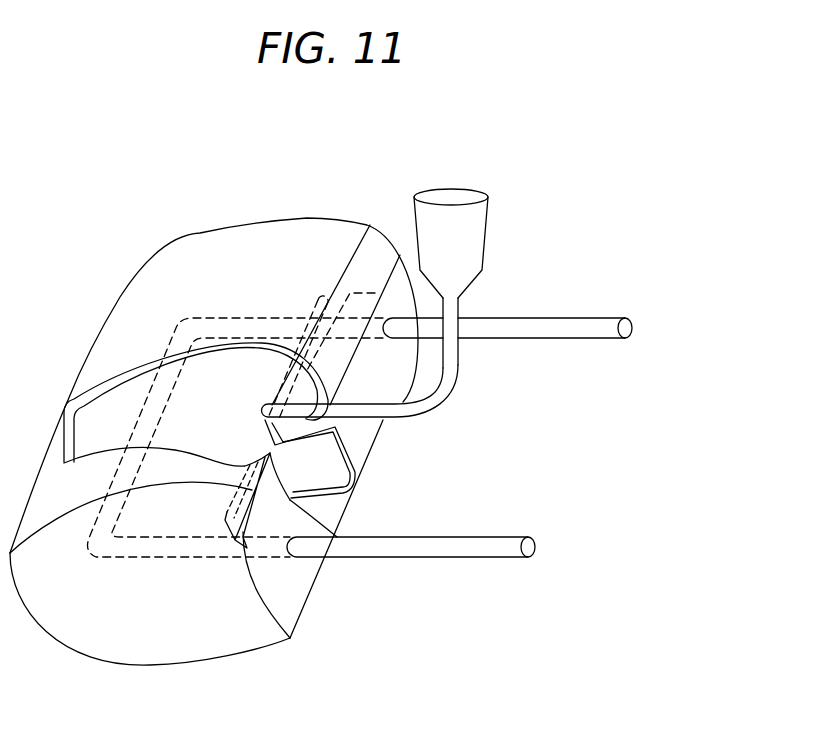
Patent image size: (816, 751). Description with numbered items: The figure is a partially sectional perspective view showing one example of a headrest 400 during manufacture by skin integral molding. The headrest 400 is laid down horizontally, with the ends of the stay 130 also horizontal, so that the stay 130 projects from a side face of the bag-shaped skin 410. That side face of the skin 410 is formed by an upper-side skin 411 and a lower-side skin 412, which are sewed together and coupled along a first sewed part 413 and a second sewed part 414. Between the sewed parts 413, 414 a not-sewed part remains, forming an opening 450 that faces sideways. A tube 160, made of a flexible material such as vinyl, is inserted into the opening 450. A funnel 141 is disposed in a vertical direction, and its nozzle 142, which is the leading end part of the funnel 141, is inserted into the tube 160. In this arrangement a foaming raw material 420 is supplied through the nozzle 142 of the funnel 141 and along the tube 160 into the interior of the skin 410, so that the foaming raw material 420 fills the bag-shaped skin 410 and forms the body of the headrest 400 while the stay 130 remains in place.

The stay 130 is at (607, 328).
The funnel 141 is at (480, 238).
The nozzle 142 is at (453, 313).
The tube 160 is at (428, 398).
The headrest 400 is at (115, 190).
The skin 410 is at (212, 255).
The upper-side skin 411 is at (367, 263).
The lower-side skin 412 is at (300, 588).
The sewed part 413 is at (398, 262).
The sewed part 414 is at (263, 560).
The foaming raw material 420 is at (198, 397).
The opening 450 is at (350, 357).